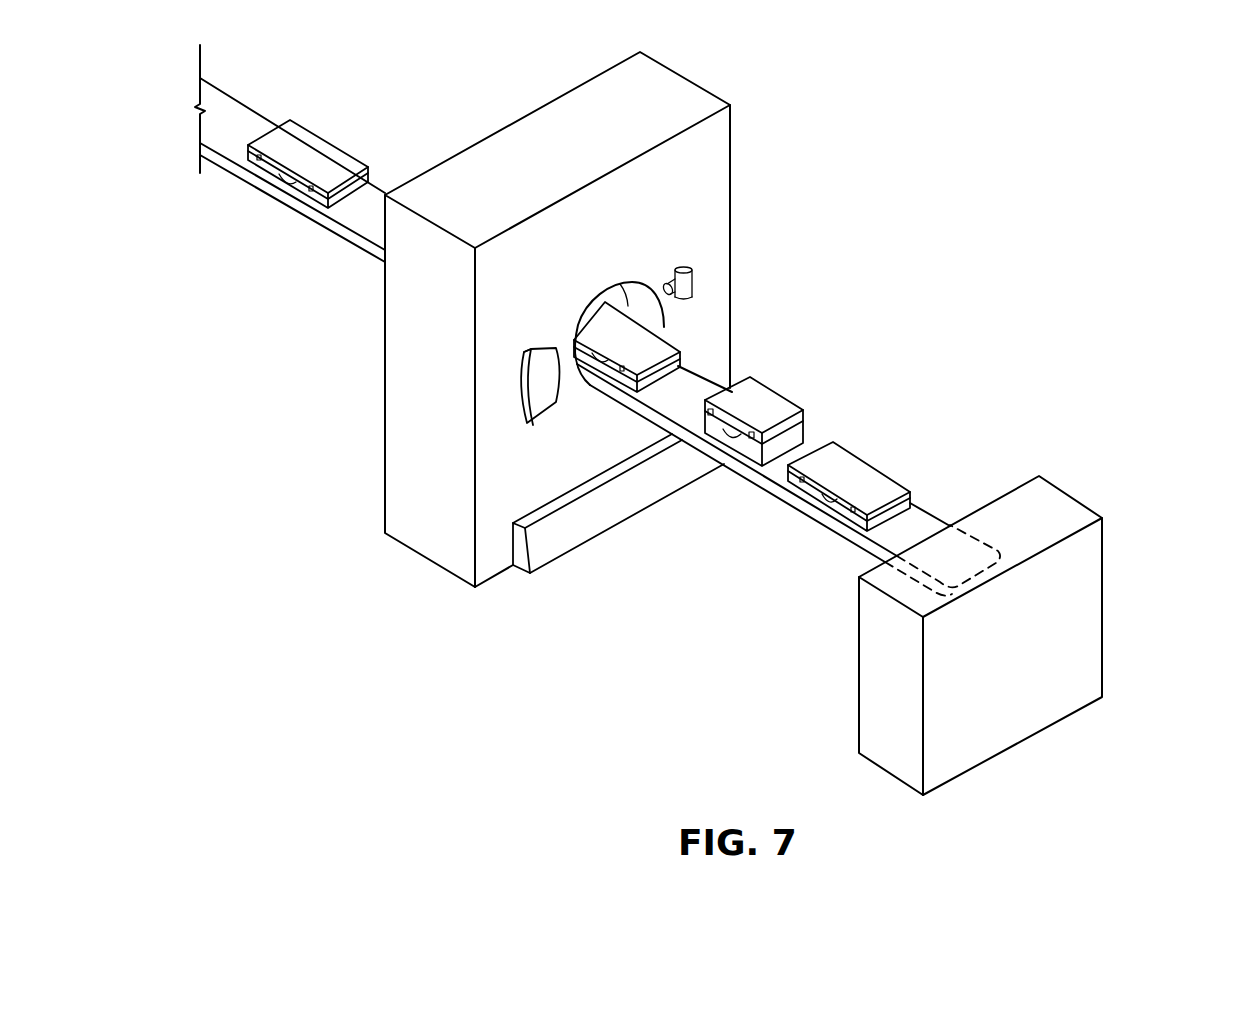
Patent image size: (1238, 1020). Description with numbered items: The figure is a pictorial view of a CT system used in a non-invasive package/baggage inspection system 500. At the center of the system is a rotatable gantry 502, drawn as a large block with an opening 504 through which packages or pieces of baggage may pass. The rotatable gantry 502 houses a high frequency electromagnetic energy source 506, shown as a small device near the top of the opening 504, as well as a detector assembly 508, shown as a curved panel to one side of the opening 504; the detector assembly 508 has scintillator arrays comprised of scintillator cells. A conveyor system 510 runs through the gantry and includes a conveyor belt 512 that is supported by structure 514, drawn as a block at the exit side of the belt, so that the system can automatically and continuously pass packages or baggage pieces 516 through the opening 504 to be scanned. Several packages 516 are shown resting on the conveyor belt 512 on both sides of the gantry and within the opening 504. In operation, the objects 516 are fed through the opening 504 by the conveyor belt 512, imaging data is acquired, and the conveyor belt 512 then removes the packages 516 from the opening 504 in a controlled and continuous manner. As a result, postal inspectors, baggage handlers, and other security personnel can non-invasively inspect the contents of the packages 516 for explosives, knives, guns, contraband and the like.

The package/baggage inspection system 500 is at (980, 348).
The rotatable gantry 502 is at (697, 200).
The opening 504 is at (654, 325).
The high frequency electromagnetic energy source 506 is at (697, 279).
The detector assembly 508 is at (543, 365).
The conveyor system 510 is at (212, 192).
The conveyor belt 512 is at (353, 220).
The structure 514 is at (1104, 586).
The packages or baggage pieces 516 is at (313, 148).